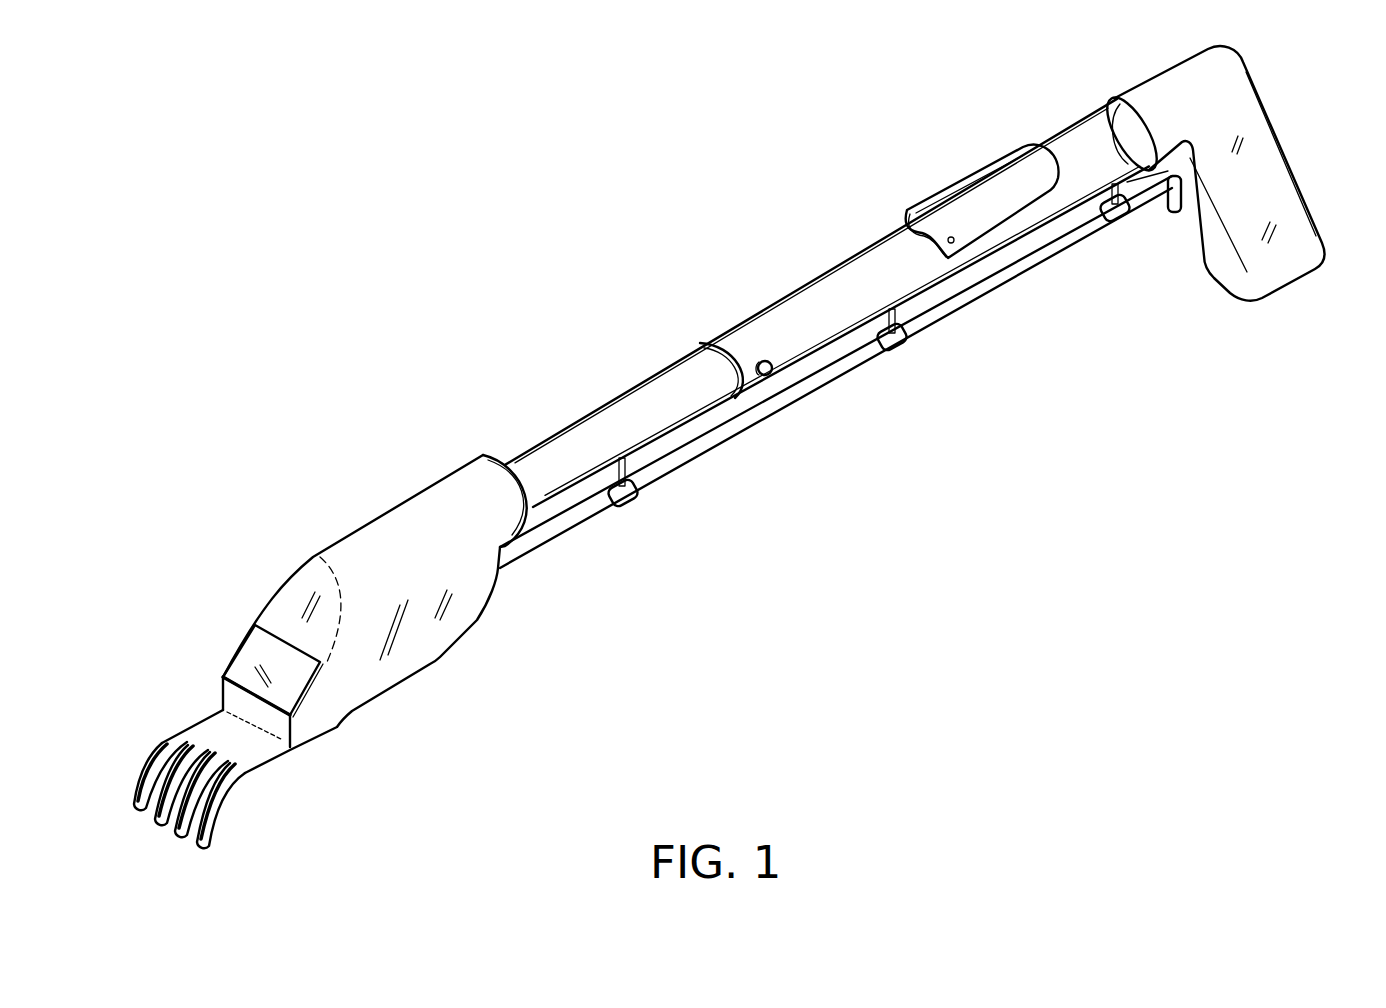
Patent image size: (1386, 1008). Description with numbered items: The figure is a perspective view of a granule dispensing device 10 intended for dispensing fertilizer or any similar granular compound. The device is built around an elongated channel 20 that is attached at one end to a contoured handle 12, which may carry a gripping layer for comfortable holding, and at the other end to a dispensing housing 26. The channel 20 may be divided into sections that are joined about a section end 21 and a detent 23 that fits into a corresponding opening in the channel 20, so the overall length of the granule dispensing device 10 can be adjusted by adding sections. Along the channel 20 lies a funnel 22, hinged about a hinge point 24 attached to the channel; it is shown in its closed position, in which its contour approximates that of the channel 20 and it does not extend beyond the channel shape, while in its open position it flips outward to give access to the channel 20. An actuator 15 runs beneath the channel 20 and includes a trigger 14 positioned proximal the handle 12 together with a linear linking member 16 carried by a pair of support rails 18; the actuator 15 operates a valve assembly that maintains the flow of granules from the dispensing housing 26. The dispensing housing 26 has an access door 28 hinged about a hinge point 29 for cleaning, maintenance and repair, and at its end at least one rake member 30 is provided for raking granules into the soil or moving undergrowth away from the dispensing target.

The granule dispensing device 10 is at (860, 728).
The handle 12 is at (1277, 174).
The trigger 14 is at (1176, 205).
The actuator 15 is at (840, 369).
The linear linking member 16 is at (1022, 270).
The support rails 18 is at (888, 340).
The channel 20 is at (587, 408).
The section end 21 is at (712, 344).
The funnel 22 is at (977, 190).
The detent 23 is at (760, 361).
The hinge point 24 is at (952, 236).
The dispensing housing 26 is at (377, 519).
The access door 28 is at (253, 662).
The hinge point 29 is at (258, 618).
The rake member 30 is at (163, 752).